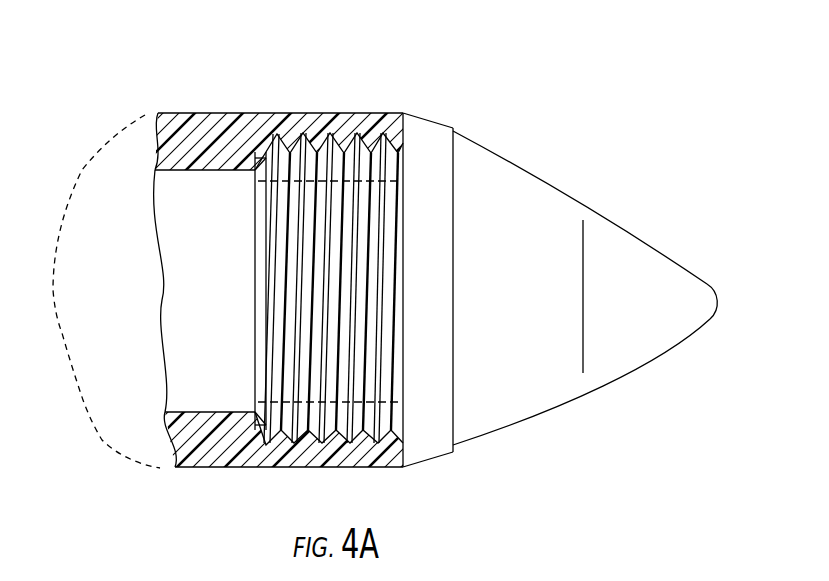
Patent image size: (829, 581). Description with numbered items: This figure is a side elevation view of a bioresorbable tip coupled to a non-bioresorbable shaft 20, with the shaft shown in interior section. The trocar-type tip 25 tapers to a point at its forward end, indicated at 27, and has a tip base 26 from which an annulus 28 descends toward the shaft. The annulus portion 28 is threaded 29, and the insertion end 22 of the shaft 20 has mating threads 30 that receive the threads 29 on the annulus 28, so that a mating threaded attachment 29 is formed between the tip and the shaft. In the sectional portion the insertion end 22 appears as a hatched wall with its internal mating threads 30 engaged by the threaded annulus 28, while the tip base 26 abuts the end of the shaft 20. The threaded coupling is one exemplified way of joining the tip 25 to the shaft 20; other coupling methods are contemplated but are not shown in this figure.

The shaft 20 is at (93, 291).
The insertion end 22 is at (420, 506).
The trocar-type tip 25 is at (594, 243).
The tip base 26 is at (430, 452).
The rounded tip 27 is at (718, 303).
The annulus 28 is at (345, 122).
The mating threaded attachment 29 is at (332, 122).
The mating threads 30 is at (205, 112).